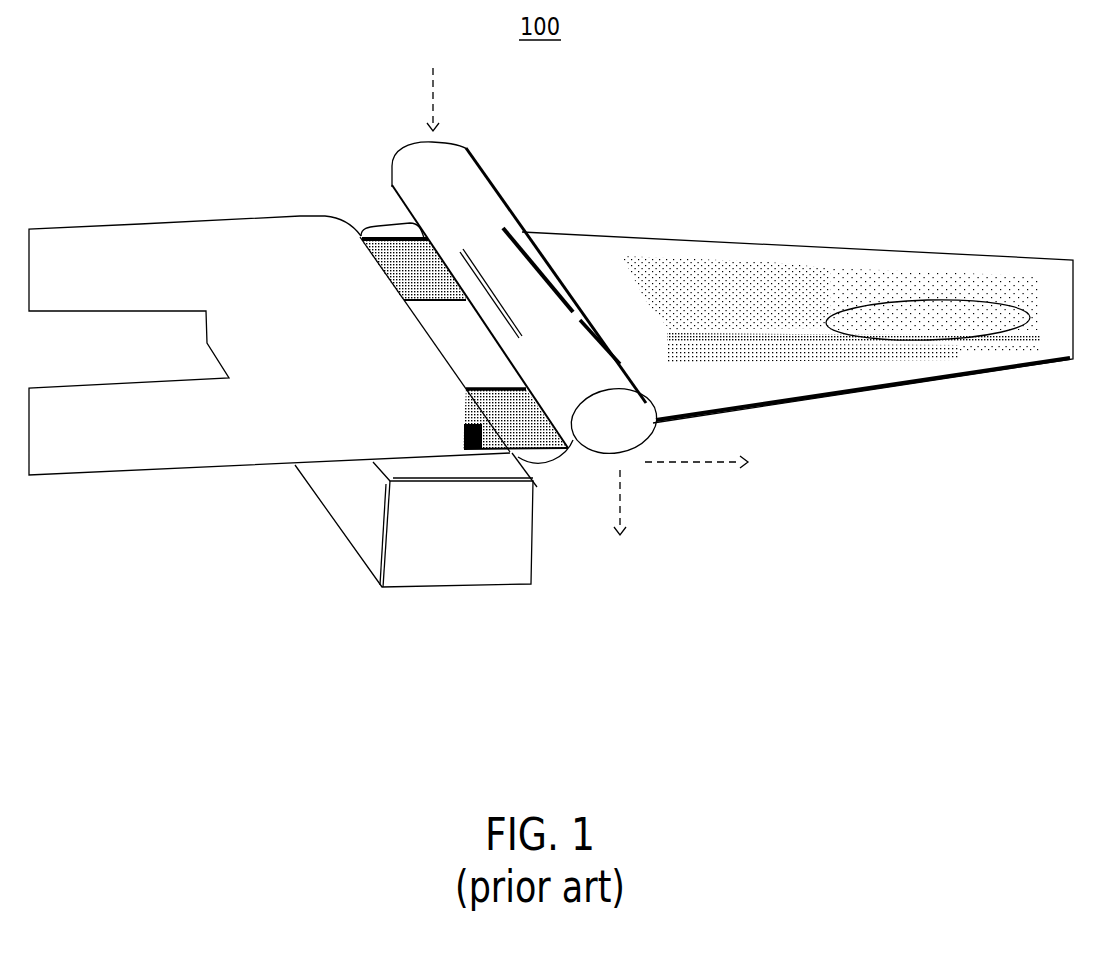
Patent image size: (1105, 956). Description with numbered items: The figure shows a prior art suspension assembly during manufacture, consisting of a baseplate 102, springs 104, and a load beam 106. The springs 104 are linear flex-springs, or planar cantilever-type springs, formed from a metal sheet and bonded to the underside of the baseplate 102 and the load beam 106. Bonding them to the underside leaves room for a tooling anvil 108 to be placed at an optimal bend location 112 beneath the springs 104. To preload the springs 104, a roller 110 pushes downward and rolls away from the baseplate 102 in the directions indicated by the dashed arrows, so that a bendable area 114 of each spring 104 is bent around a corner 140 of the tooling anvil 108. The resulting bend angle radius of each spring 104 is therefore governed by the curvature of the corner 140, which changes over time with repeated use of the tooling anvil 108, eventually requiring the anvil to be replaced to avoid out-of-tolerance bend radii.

The baseplate 102 is at (117, 238).
The springs 104 is at (443, 309).
The load beam 106 is at (740, 247).
The tooling anvil 108 is at (408, 587).
The roller 110 is at (513, 206).
The optimal bend location 112 is at (505, 462).
The bendable area 114 is at (391, 226).
The corner 140 is at (547, 494).